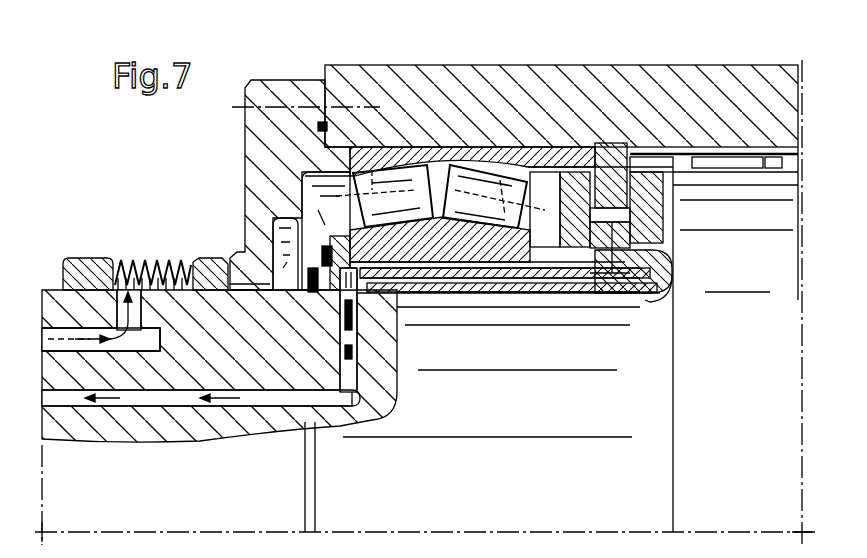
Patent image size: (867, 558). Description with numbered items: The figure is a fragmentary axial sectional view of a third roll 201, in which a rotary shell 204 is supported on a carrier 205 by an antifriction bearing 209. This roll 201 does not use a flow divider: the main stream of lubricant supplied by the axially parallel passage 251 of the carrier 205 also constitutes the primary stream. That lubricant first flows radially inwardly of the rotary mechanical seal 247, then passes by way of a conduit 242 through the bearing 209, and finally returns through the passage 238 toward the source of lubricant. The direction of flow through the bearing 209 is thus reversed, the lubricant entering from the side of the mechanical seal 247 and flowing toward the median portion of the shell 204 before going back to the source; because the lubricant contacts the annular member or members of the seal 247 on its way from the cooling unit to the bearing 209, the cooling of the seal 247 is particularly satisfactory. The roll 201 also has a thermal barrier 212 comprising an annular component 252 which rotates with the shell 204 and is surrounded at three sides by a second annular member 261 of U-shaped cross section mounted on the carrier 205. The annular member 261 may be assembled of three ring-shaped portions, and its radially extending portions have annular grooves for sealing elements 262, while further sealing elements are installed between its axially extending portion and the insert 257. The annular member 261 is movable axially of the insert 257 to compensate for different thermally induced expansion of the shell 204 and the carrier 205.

The third roll 201 is at (303, 60).
The shell 204 is at (716, 86).
The carrier 205 is at (777, 511).
The antifriction bearing 209 is at (393, 190).
The thermal barrier 212 is at (588, 128).
The passage 238 is at (63, 398).
The conduit 242 is at (290, 173).
The rotary mechanical seal 247 is at (199, 246).
The axially parallel passage 251 is at (60, 333).
The annular component 252 is at (614, 143).
The insert 257 is at (650, 278).
The second annular member 261 is at (675, 255).
The sealing elements 262 is at (670, 216).